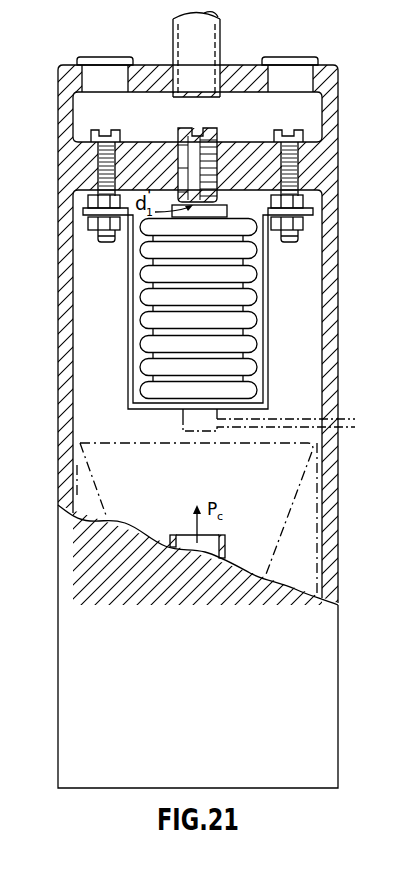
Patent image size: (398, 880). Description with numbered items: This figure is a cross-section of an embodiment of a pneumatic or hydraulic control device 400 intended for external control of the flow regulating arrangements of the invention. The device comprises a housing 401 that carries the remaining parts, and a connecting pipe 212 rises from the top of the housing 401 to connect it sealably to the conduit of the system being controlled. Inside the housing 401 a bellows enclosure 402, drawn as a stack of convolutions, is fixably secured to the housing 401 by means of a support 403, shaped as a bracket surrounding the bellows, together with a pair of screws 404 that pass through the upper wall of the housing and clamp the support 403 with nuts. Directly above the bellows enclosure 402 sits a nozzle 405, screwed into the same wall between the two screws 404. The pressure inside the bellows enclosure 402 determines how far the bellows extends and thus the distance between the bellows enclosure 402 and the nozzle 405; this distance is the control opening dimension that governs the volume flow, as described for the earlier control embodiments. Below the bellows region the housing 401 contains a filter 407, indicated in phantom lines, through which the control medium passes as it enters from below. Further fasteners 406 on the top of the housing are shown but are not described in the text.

The connecting pipe 212 is at (210, 53).
The pneumatic or hydraulic control device 400 is at (56, 652).
The housing 401 is at (59, 413).
The bellows enclosure 402 is at (253, 345).
The support 403 is at (267, 278).
The screws 404 is at (113, 133).
The nozzle 405 is at (218, 133).
The fastening bolts 406 is at (122, 62).
The filter 407 is at (77, 495).